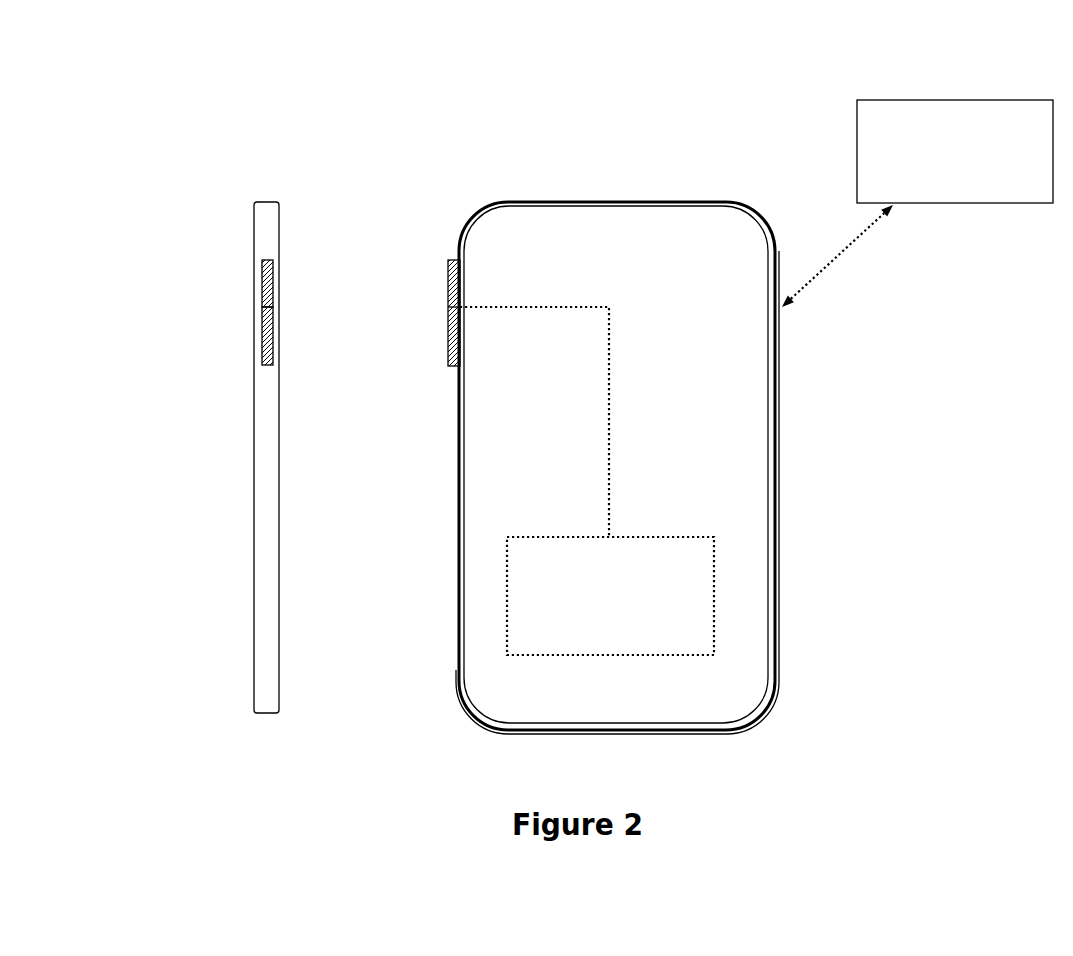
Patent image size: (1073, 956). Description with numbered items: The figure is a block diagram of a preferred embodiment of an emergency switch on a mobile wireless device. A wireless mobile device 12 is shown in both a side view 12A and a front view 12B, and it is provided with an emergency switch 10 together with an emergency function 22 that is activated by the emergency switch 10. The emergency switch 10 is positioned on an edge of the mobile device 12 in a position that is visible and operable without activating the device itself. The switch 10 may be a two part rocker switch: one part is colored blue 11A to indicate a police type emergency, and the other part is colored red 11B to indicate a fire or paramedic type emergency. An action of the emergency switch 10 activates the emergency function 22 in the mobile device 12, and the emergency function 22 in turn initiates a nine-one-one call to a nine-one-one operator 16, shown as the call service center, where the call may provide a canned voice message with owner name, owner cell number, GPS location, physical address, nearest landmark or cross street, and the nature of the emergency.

The emergency switch 10 is at (294, 272).
The blue colored switch part 11A is at (252, 278).
The red colored switch part 11B is at (251, 320).
The wireless mobile device 12 is at (678, 155).
The side view 12A is at (269, 166).
The front view 12B is at (598, 167).
The 911 operator 16 is at (949, 77).
The emergency function 22 is at (587, 481).